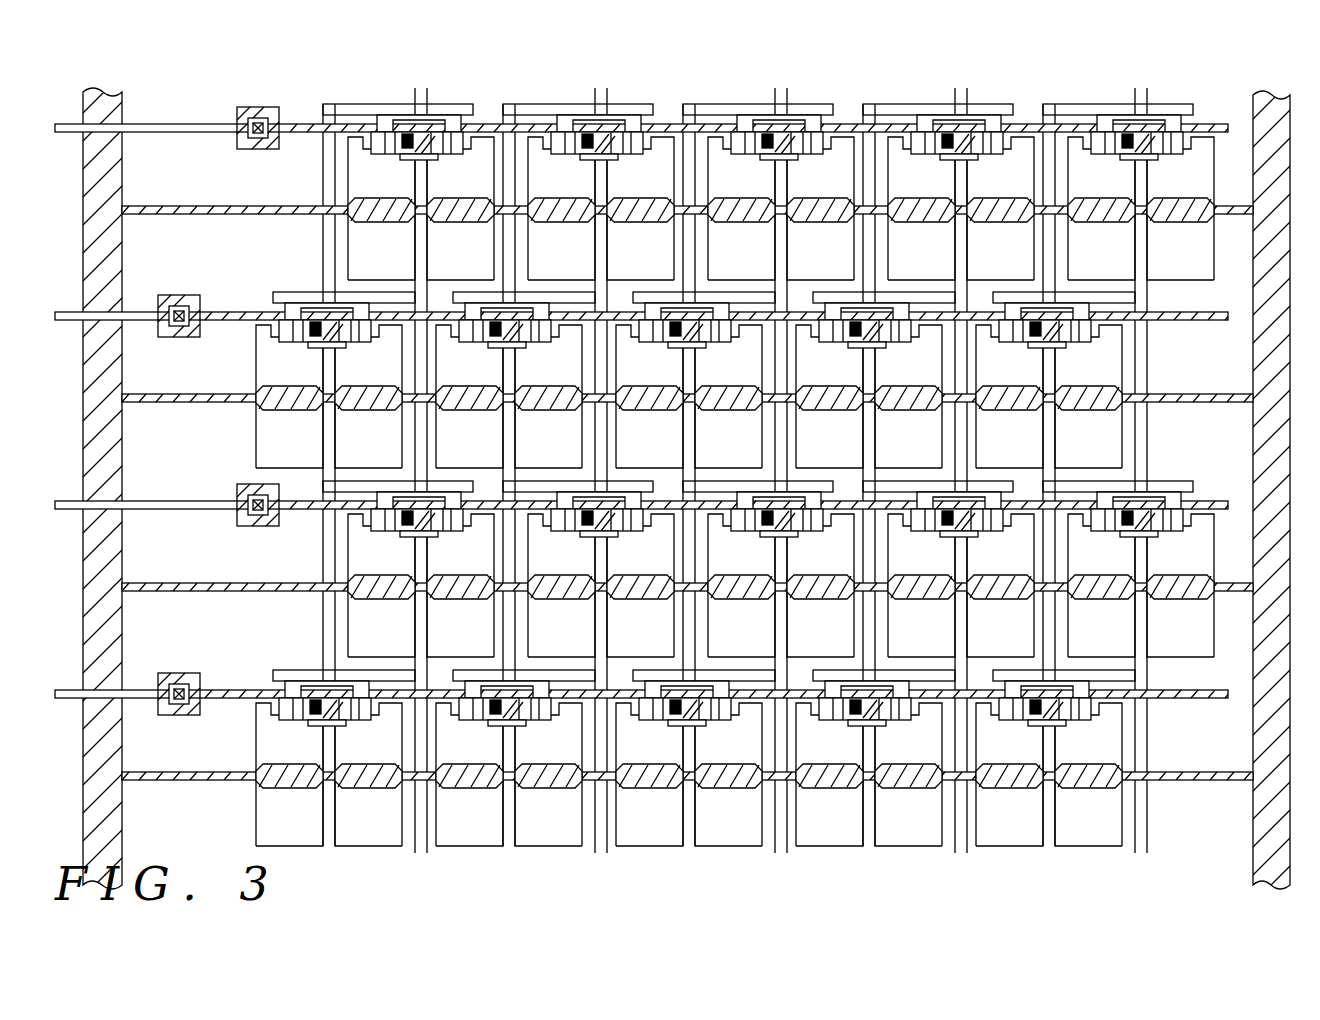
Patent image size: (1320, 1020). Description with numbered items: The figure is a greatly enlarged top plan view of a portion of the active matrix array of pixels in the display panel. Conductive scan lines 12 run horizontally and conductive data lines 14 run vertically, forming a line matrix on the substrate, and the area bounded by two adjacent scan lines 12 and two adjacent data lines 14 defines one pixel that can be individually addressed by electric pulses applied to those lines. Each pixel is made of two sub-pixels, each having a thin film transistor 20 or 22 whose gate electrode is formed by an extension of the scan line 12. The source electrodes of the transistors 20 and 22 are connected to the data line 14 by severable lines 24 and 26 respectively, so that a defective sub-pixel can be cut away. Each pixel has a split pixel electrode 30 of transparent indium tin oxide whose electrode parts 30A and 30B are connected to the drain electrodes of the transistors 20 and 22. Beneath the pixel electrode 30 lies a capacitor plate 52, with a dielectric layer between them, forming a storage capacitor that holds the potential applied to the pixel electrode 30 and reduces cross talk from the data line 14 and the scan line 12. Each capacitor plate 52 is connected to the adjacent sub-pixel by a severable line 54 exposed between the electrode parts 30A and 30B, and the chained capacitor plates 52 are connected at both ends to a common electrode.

The scan line 12 is at (153, 126).
The data line 14 is at (422, 97).
The transistor 20 is at (383, 123).
The transistor 22 is at (472, 127).
The severable line 24 is at (397, 132).
The severable line 26 is at (463, 126).
The split pixel electrode 30 is at (582, 186).
The electrode part 30A is at (408, 262).
The electrode part 30B is at (490, 262).
The capacitor plate 52 is at (452, 191).
The severable line 54 is at (1165, 782).